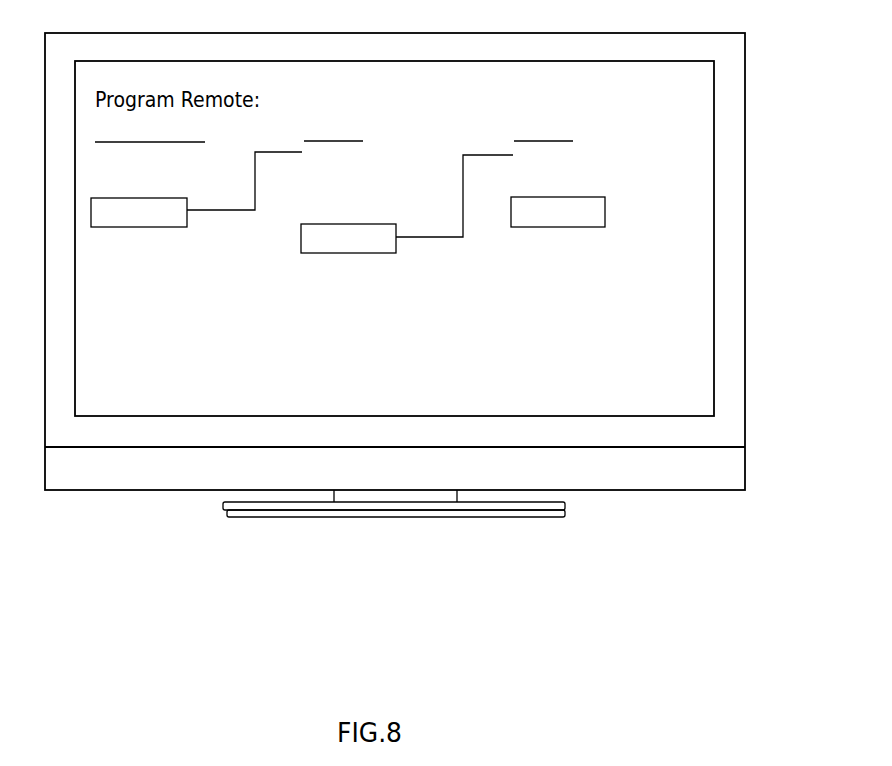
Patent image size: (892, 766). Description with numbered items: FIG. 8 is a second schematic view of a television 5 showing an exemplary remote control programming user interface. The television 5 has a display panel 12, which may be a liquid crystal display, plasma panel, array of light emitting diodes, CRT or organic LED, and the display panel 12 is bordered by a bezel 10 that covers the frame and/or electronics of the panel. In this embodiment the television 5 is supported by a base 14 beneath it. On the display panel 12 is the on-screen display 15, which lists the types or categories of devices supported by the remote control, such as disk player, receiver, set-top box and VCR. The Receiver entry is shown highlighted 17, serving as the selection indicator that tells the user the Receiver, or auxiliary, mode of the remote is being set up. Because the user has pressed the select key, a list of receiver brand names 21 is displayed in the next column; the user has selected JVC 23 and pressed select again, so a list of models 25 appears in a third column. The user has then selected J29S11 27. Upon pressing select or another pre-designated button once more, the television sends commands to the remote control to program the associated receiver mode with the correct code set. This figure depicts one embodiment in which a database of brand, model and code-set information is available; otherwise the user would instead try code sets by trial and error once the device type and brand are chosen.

The television 5 is at (848, 172).
The bezel 10 is at (713, 53).
The display panel 12 is at (685, 320).
The base 14 is at (548, 506).
The on-screen display 15 is at (268, 118).
The highlighted selection (Receiver) 17 is at (185, 215).
The list of receiver brand names 21 is at (388, 148).
The selected brand (JVC) 23 is at (385, 245).
The list of models 25 is at (606, 171).
The selected model (J29S11) 27 is at (603, 207).